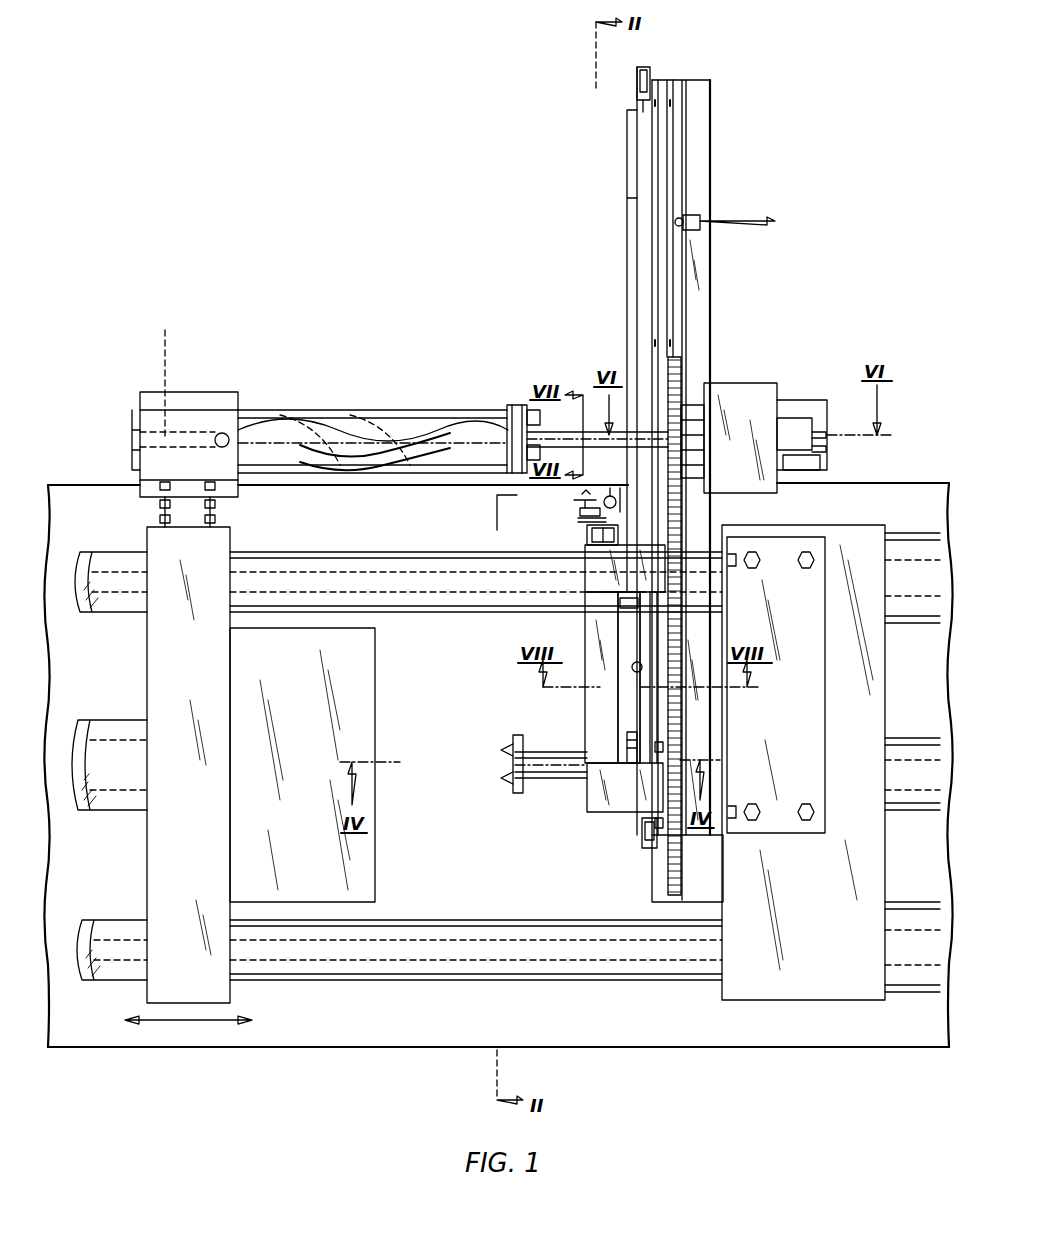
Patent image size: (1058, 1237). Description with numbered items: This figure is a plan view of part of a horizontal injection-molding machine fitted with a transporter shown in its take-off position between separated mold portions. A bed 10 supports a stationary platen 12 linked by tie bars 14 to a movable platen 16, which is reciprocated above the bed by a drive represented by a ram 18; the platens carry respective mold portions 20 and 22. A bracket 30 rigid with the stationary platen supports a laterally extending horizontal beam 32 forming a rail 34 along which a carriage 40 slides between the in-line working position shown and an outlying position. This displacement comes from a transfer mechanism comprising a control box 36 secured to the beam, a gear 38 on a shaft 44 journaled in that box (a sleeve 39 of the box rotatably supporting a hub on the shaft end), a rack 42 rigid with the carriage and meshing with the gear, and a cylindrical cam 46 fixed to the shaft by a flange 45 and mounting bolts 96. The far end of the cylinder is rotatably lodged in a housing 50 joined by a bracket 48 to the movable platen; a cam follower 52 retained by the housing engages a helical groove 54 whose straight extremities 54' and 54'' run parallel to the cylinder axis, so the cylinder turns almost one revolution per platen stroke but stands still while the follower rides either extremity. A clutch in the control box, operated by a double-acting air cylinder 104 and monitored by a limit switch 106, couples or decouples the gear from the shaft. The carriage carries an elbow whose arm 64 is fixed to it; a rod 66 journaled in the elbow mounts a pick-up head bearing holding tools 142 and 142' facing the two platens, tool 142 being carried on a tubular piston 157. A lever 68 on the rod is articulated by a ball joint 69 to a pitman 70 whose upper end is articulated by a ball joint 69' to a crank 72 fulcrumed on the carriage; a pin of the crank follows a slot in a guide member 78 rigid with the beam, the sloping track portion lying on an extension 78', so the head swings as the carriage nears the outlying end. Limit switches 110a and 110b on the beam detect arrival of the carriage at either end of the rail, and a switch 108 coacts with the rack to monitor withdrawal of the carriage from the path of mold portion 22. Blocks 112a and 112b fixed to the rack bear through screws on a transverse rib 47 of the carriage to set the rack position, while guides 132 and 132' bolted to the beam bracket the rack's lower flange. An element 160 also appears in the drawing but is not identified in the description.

The bed 10 is at (810, 1035).
The stationary platen 12 is at (814, 930).
The tie bars 14 is at (320, 568).
The movable platen 16 is at (204, 787).
The ram 18 is at (122, 720).
The mold portion 20 is at (656, 896).
The mold portion 22 is at (309, 787).
The bracket 30 is at (812, 712).
The horizontal beam 32 is at (700, 130).
The rail 34 is at (648, 188).
The control box 36 is at (754, 388).
The gear 38 is at (681, 362).
The sleeve 39 is at (818, 408).
The carriage 40 is at (590, 618).
The rack 42 is at (668, 860).
The shaft 44 is at (580, 430).
The flange 45 is at (518, 403).
The cylindrical cam 46 is at (400, 414).
The transverse rib 47 is at (594, 811).
The bracket 48 is at (150, 509).
The housing 50 is at (208, 396).
The cam follower 52 is at (234, 448).
The helical groove 54 is at (435, 493).
The groove extremity 54' is at (492, 386).
The groove extremity 54'' is at (169, 373).
The arm 64 is at (596, 538).
The rod 66 is at (596, 542).
The lever 68 is at (580, 520).
The ball joint 69 is at (546, 509).
The ball joint 69' is at (609, 483).
The pitman 70 is at (580, 509).
The crank 72 is at (626, 530).
The guide member 78 is at (614, 451).
The extension 78' is at (607, 351).
The mounting bolts 96 is at (540, 418).
The double-acting air cylinder 104 is at (795, 415).
The limit switch 106 is at (808, 470).
The switch 108 is at (692, 215).
The limit switch 110a is at (650, 82).
The limit switch 110b is at (642, 832).
The block 112a is at (663, 746).
The block 112b is at (663, 826).
The guide 132 is at (608, 228).
The guide 132' is at (721, 255).
The holding tool 142 is at (588, 731).
The holding tool 142' is at (508, 743).
The tubular piston 157 is at (555, 770).
The block edge 160 is at (380, 762).